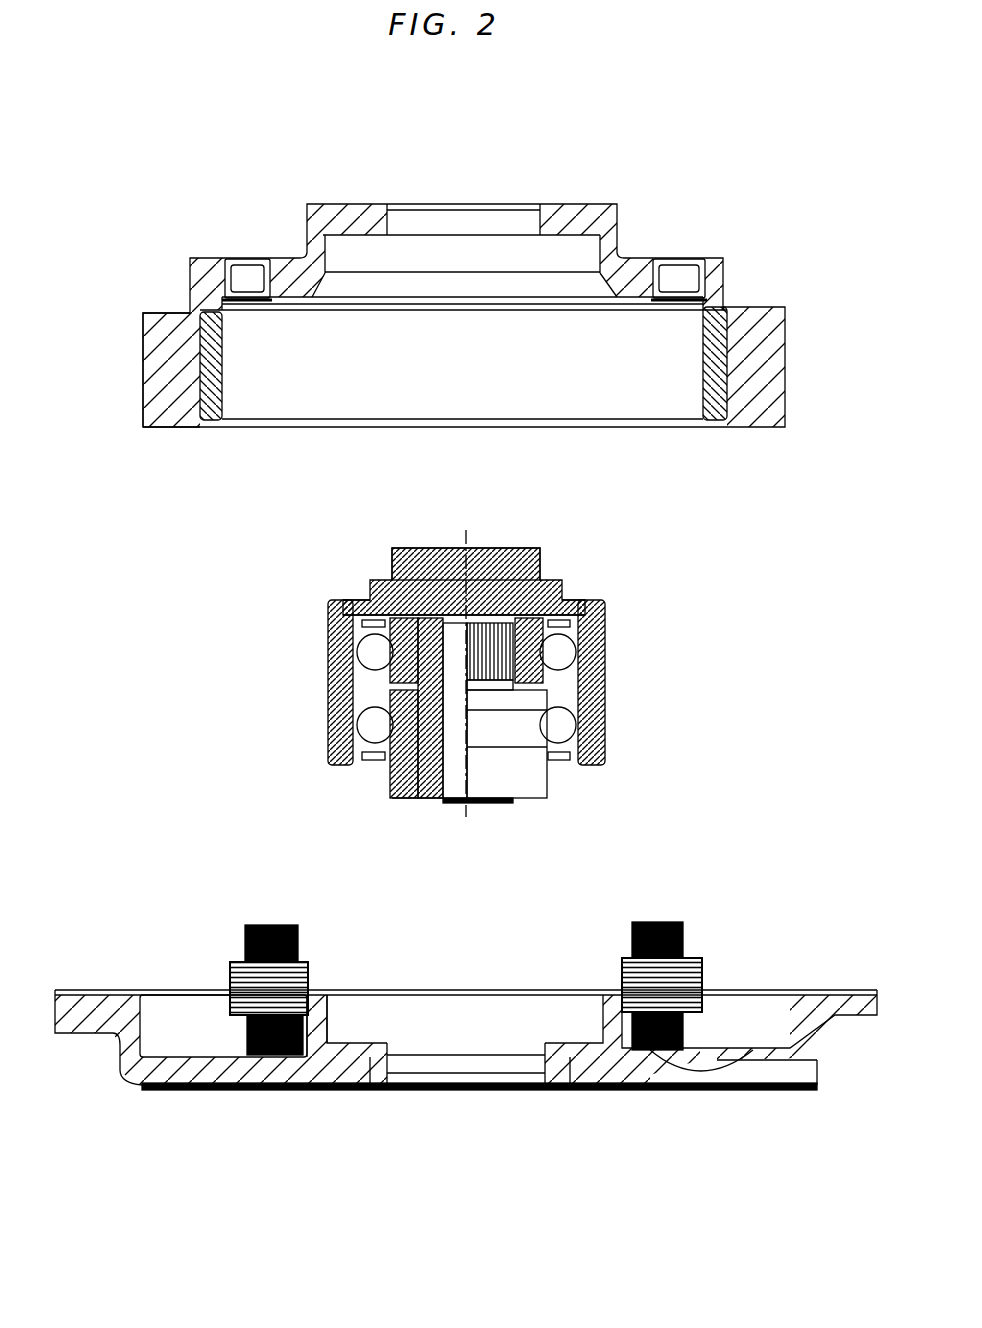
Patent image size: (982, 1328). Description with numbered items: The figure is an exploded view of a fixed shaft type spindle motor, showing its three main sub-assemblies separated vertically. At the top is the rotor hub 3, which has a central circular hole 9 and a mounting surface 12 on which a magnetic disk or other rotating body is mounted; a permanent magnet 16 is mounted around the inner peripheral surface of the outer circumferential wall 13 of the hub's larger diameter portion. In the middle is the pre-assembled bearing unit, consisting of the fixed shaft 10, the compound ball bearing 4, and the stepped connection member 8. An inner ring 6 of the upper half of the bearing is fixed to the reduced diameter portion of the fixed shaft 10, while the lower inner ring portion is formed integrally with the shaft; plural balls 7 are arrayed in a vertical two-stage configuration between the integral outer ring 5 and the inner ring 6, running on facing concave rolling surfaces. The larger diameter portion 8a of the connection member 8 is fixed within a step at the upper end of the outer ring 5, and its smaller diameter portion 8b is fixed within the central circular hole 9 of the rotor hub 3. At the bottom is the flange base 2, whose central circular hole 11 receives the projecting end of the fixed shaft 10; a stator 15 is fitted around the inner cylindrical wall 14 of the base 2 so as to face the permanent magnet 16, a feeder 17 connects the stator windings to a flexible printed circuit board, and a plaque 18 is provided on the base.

The flange base 2 is at (385, 1096).
The rotor hub 3 is at (564, 178).
The compound ball bearing 4 is at (609, 676).
The outer ring 5 is at (330, 641).
The inner ring 6 is at (378, 596).
The balls 7 is at (368, 725).
The connection member 8 is at (430, 540).
The larger diameter portion 8a is at (572, 598).
The smaller diameter portion 8b is at (505, 560).
The central circular hole 9 is at (400, 205).
The fixed shaft 10 is at (445, 806).
The central circular hole 11 is at (528, 1088).
The mounting surface 12 is at (645, 258).
The outer circumferential wall 13 is at (172, 405).
The inner cylindrical wall 14 is at (320, 994).
The stator 15 is at (243, 963).
The permanent magnet 16 is at (212, 362).
The feeder 17 is at (695, 1082).
The plaque 18 is at (290, 1092).